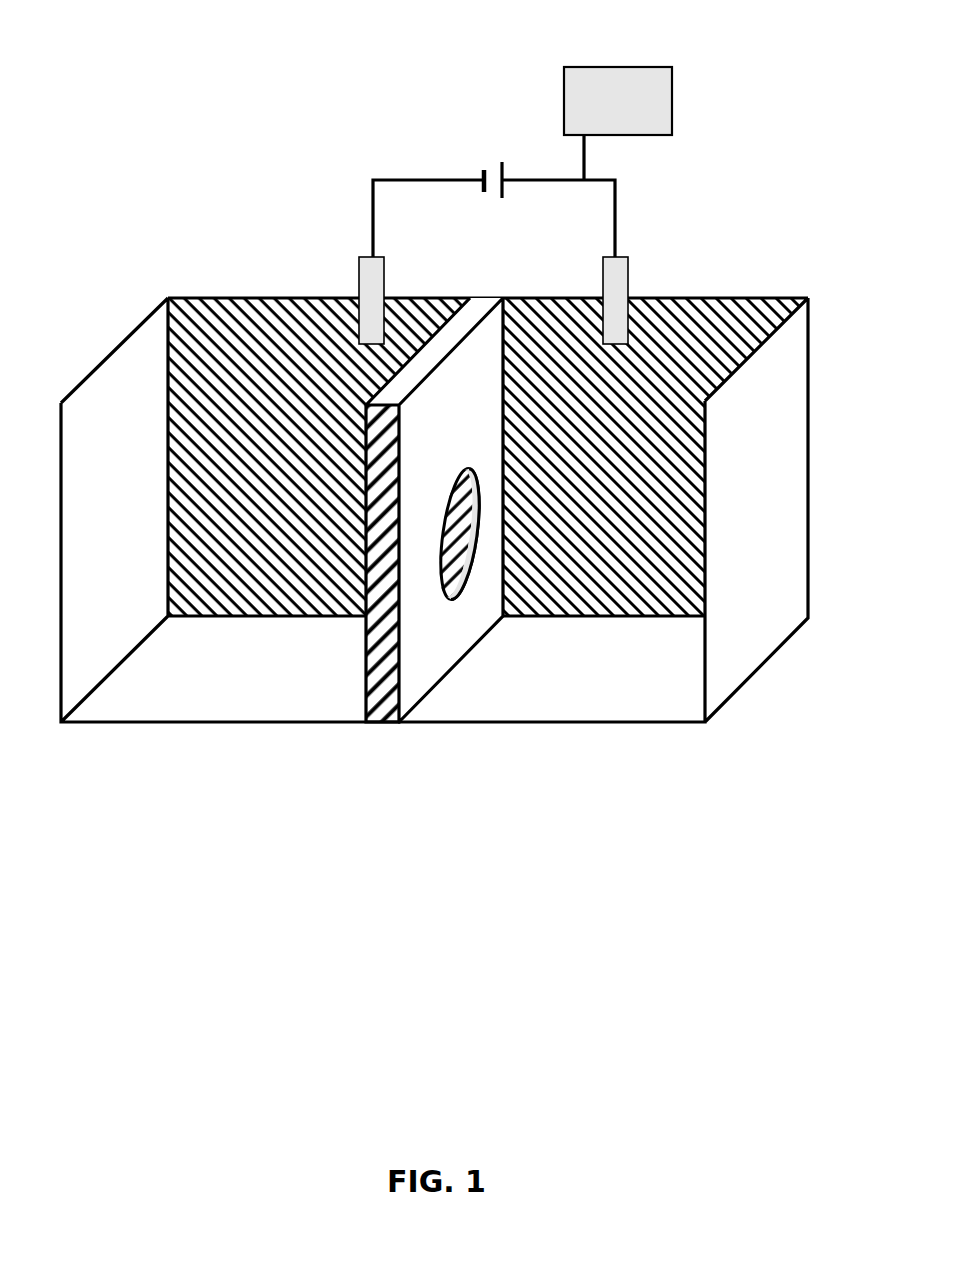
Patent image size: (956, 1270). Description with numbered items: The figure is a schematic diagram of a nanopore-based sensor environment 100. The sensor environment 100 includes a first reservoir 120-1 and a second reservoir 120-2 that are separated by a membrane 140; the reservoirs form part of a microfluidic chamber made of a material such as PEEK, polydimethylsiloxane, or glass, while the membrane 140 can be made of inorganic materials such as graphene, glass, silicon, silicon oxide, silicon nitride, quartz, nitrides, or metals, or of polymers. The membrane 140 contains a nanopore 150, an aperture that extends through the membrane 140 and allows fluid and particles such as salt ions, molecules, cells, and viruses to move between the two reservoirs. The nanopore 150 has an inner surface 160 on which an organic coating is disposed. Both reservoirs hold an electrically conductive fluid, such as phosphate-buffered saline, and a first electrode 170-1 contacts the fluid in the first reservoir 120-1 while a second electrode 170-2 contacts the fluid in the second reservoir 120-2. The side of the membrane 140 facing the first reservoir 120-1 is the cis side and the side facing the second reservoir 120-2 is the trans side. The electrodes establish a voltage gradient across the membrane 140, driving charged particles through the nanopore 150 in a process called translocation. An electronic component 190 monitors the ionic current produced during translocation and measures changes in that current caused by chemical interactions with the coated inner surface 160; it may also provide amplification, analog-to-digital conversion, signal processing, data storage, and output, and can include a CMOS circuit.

The nanopore-based sensor environment 100 is at (191, 38).
The first reservoir 120-1 is at (205, 710).
The second reservoir 120-2 is at (572, 710).
The membrane 140 is at (488, 308).
The nanopore 150 is at (445, 523).
The inner surface 160 is at (470, 492).
The first electrode 170-1 is at (365, 286).
The second electrode 170-2 is at (622, 286).
The electronic component 190 is at (618, 101).